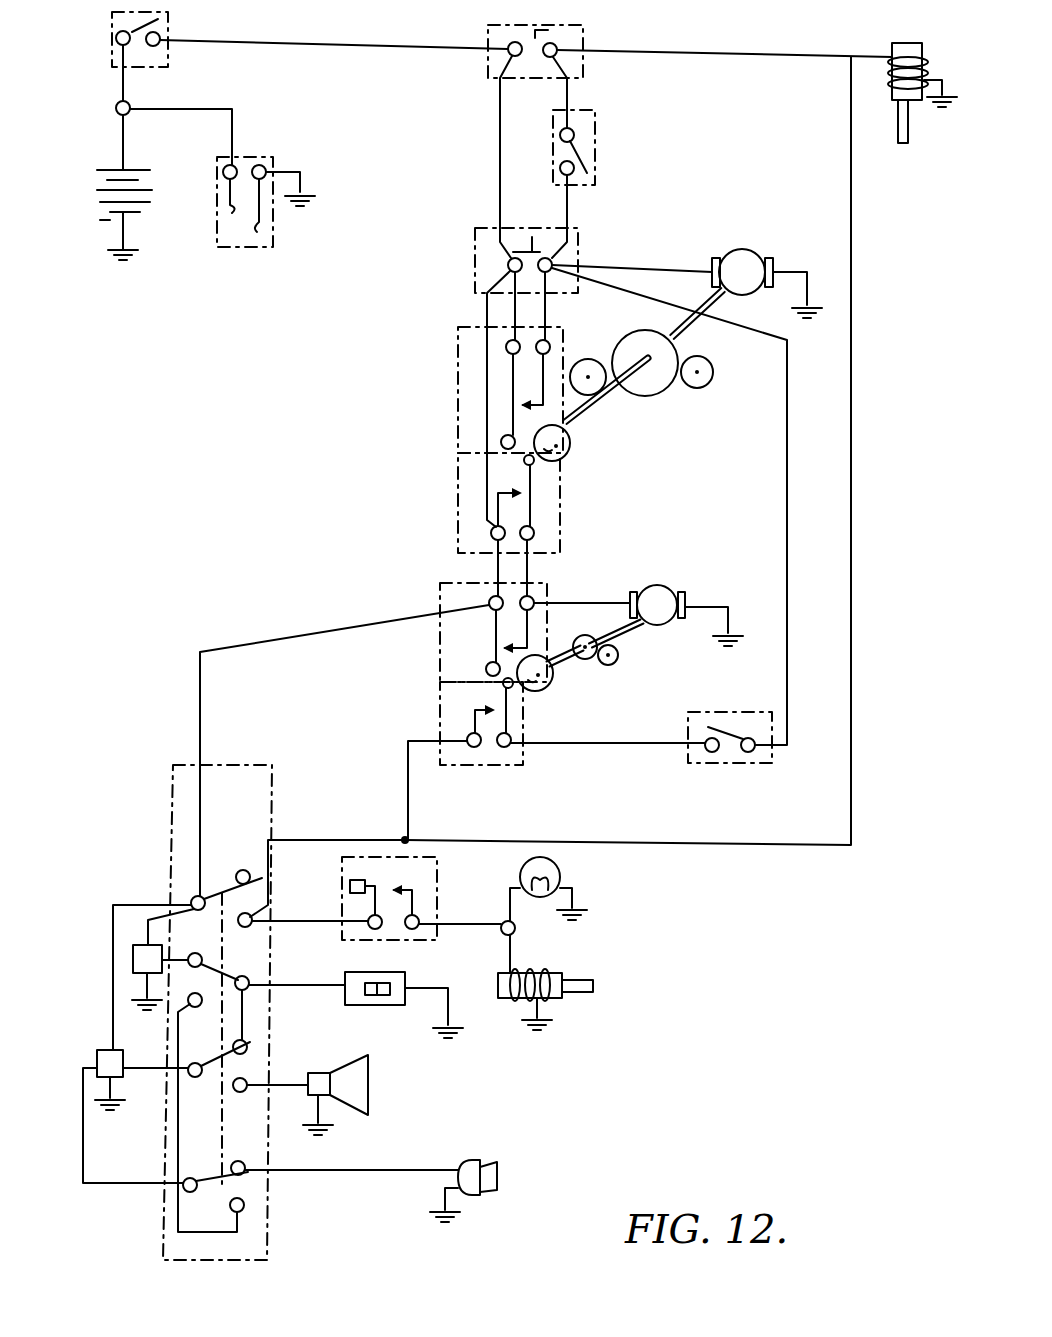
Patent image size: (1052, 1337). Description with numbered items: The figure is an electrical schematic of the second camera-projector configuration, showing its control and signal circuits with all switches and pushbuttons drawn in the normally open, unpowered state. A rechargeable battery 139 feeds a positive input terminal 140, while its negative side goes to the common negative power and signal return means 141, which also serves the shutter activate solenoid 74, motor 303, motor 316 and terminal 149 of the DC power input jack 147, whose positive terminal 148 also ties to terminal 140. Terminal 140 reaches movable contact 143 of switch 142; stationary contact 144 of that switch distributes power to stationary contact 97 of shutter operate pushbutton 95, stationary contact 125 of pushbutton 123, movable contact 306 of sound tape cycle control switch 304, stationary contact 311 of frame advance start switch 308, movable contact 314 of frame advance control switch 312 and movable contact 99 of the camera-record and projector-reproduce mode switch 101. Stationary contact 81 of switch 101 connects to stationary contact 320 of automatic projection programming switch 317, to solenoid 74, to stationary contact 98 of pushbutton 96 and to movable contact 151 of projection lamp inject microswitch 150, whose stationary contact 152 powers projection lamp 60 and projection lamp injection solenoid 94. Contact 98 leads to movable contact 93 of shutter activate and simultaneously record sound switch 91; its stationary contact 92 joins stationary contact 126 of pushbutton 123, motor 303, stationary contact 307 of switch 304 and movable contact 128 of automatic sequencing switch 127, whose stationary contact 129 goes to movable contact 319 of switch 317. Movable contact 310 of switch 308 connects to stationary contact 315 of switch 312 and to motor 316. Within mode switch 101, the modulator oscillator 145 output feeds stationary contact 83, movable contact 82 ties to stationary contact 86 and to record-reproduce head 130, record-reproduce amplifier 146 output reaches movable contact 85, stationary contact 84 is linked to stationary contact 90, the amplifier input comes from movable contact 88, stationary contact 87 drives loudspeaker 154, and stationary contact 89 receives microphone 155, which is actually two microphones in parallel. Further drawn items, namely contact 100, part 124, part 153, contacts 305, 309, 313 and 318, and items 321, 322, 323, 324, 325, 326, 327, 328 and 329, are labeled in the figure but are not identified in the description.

The projection lamp 60 is at (560, 865).
The shutter activate solenoid 74 is at (922, 52).
The stationary contact 81 is at (243, 927).
The movable contact 82 is at (248, 980).
The stationary contact 83 is at (202, 960).
The stationary contact 84 is at (195, 1007).
The movable contact 85 is at (190, 1078).
The stationary contact 86 is at (250, 1042).
The stationary contact 87 is at (240, 1093).
The movable contact 88 is at (188, 1193).
The stationary contact 89 is at (232, 1162).
The stationary contact 90 is at (245, 1207).
The shutter activate and simultaneously record sound switch 91 is at (598, 112).
The stationary contact 92 is at (583, 183).
The movable contact 93 is at (575, 134).
The projection lamp injection solenoid 94 is at (550, 975).
The shutter operate pushbutton 95 is at (488, 62).
The pushbutton 96 is at (572, 34).
The stationary contact 97 is at (508, 72).
The stationary contact 98 is at (578, 58).
The movable contact 99 is at (186, 909).
The contact 100 is at (250, 872).
The camera-record and projector-reproduce mode switch 101 is at (275, 767).
The pushbutton 123 is at (580, 232).
The relay armature 124 is at (498, 241).
The stationary contact 125 is at (508, 265).
The stationary contact 126 is at (553, 262).
The automatic sequence frame advance program switch 127 is at (688, 763).
The movable contact 128 is at (752, 752).
The stationary contact 129 is at (710, 752).
The record-reproduce head 130 is at (343, 1005).
The rechargeable battery 139 is at (137, 171).
The positive input terminal 140 is at (128, 102).
The common negative power and signal return means 141 is at (128, 246).
The switch 142 is at (172, 18).
The movable contact 143 is at (118, 50).
The stationary contact 144 is at (160, 42).
The modulator oscillator 145 is at (133, 960).
The record-reproduce amplifier 146 is at (108, 1055).
The DC power input jack 147 is at (240, 247).
The positive terminal 148 is at (234, 165).
The terminal 149 is at (266, 172).
The projection lamp inject microswitch 150 is at (345, 860).
The movable contact 151 is at (370, 930).
The stationary contact 152 is at (414, 932).
The actuator 153 is at (350, 888).
The loudspeaker 154 is at (370, 1085).
The microphone 155 is at (497, 1173).
The motor 303 is at (745, 260).
The sound tape cycle control switch 304 is at (458, 327).
The contact 305 is at (500, 444).
The movable contact 306 is at (506, 350).
The stationary contact 307 is at (550, 348).
The frame advance start switch 308 is at (562, 513).
The contact 309 is at (535, 462).
The movable contact 310 is at (534, 535).
The stationary contact 311 is at (491, 535).
The frame advance control switch 312 is at (440, 583).
The contact 313 is at (487, 669).
The movable contact 314 is at (489, 603).
The stationary contact 315 is at (534, 603).
The motor 316 is at (665, 592).
The automatic projection programming switch 317 is at (440, 765).
The contact 318 is at (511, 690).
The movable contact 319 is at (512, 745).
The stationary contact 320 is at (467, 740).
The cam 321 is at (571, 445).
The shaft 322 is at (700, 322).
The pulley 323 is at (668, 386).
The pulley 324 is at (714, 372).
The cam 325 is at (552, 685).
The pulley 326 is at (600, 630).
The arm 327 is at (592, 668).
The pulley 328 is at (620, 655).
The pulley 329 is at (598, 392).